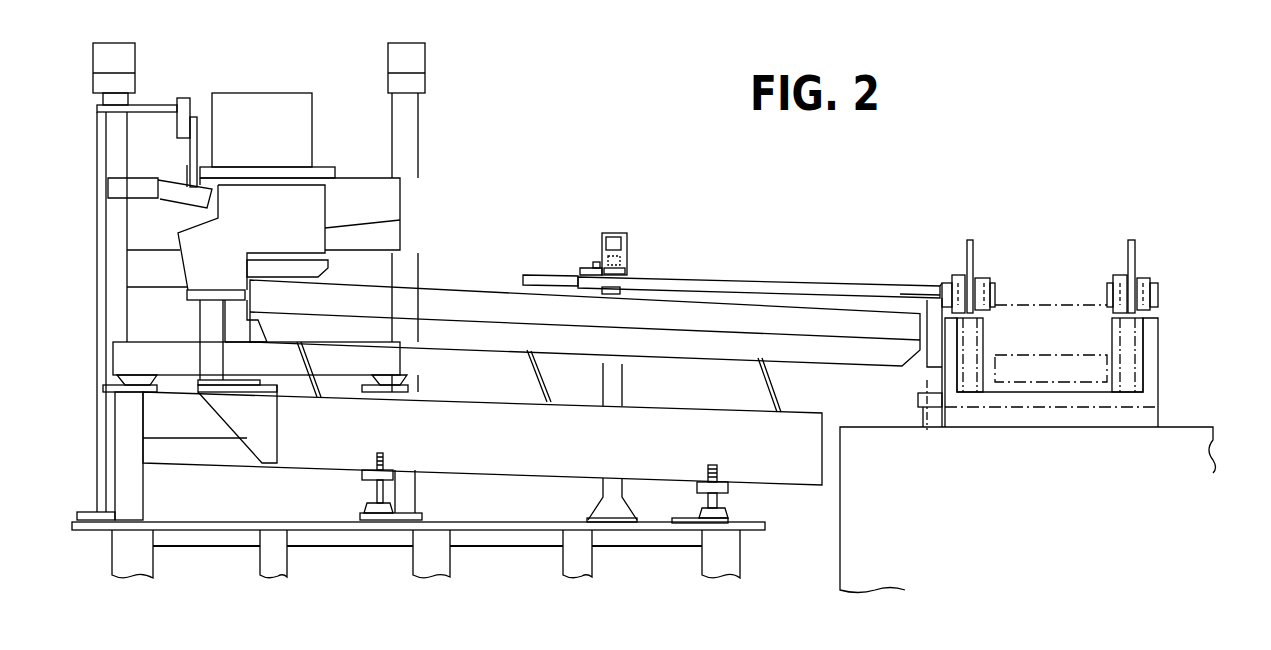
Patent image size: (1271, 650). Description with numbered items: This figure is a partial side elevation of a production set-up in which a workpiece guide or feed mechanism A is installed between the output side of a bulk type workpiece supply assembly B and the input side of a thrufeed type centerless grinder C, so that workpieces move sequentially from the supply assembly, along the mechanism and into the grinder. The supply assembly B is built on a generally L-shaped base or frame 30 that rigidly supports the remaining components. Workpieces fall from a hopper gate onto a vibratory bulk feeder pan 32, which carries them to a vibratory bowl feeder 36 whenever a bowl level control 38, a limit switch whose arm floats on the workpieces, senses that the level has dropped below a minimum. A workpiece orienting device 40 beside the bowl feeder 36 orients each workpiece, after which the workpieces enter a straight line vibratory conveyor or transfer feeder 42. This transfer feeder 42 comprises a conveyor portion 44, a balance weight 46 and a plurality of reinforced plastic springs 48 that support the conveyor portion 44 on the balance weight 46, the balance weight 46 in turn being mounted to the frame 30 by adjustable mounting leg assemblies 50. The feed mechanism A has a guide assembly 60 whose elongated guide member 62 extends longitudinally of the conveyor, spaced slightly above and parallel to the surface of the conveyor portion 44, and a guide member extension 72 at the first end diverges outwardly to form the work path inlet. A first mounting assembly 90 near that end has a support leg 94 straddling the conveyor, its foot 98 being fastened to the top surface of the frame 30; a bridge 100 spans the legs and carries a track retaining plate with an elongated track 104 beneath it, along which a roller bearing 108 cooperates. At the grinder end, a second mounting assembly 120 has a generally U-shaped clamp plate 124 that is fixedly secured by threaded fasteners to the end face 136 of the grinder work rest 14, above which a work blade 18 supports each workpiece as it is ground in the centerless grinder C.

The work rest 14 is at (1060, 400).
The work blade 18 is at (1033, 305).
The base or frame 30 is at (508, 523).
The vibratory bulk feeder pan 32 is at (302, 131).
The vibratory bowl feeder 36 is at (374, 189).
The bowl level control 38 is at (190, 151).
The workpiece orienting device 40 is at (305, 212).
The straight line vibratory conveyor or transfer feeder 42 is at (510, 274).
The conveyor portion 44 is at (490, 295).
The balance weight 46 is at (498, 453).
The reinforced plastic springs 48 is at (308, 362).
The adjustable mounting leg assemblies 50 is at (362, 477).
The guide assembly 60 is at (806, 284).
The guide member 62 is at (852, 283).
The guide member extension 72 is at (568, 241).
The first mounting assembly 90 is at (590, 257).
The support leg 94 is at (622, 378).
The foot 98 is at (625, 518).
The bridge 100 is at (617, 233).
The elongated track 104 is at (627, 247).
The roller bearing 108 is at (627, 263).
The second mounting assembly 120 is at (938, 272).
The clamp plate 124 is at (923, 360).
The end face 136 is at (927, 432).
The workpiece guide or feed mechanism A is at (887, 233).
The bulk type workpiece supply assembly B is at (460, 187).
The thrufeed type centerless grinder C is at (1241, 333).